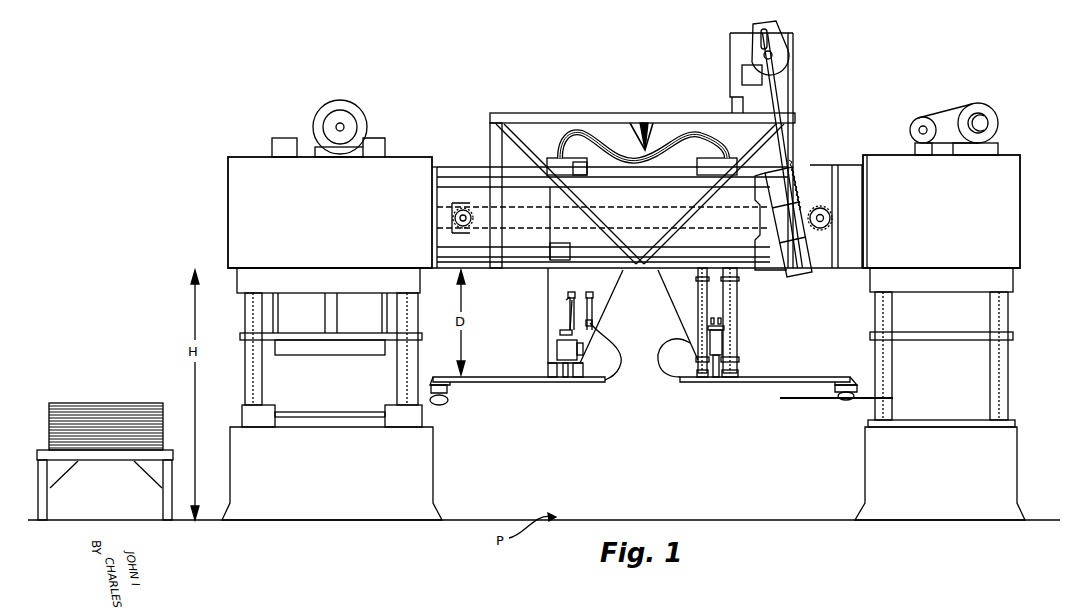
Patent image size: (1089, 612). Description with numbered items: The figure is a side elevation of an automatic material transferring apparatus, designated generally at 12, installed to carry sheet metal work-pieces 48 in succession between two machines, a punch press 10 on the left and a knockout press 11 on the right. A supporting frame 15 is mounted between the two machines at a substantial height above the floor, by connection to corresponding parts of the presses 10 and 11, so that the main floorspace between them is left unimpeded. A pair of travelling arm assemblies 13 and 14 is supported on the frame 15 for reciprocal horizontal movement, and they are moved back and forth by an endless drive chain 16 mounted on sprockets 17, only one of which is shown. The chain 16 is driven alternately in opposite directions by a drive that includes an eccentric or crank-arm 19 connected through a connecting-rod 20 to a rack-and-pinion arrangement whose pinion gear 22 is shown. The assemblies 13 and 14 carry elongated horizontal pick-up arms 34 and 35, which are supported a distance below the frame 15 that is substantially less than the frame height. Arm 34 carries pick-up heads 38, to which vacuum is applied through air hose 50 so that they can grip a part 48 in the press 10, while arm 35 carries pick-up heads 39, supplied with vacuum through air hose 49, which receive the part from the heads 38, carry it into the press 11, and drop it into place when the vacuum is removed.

The punch press 10 is at (232, 225).
The knockout press 11 is at (1010, 225).
The material transferring apparatus 12 is at (611, 113).
The travelling arm assembly 13 is at (546, 304).
The travelling arm assembly 14 is at (740, 311).
The supporting frame 15 is at (471, 164).
The endless drive chain 16 is at (652, 208).
The sprocket 17 is at (470, 228).
The crank-arm 19 is at (783, 58).
The connecting-rod 20 is at (790, 100).
The pinion gear 22 is at (822, 210).
The pick-up arm 34 is at (488, 375).
The pick-up arm 35 is at (790, 375).
The pick-up heads 38 is at (445, 399).
The pick-up heads 39 is at (836, 392).
The sheet metal part 48 is at (140, 403).
The air hose 49 is at (672, 346).
The air hose 50 is at (618, 356).